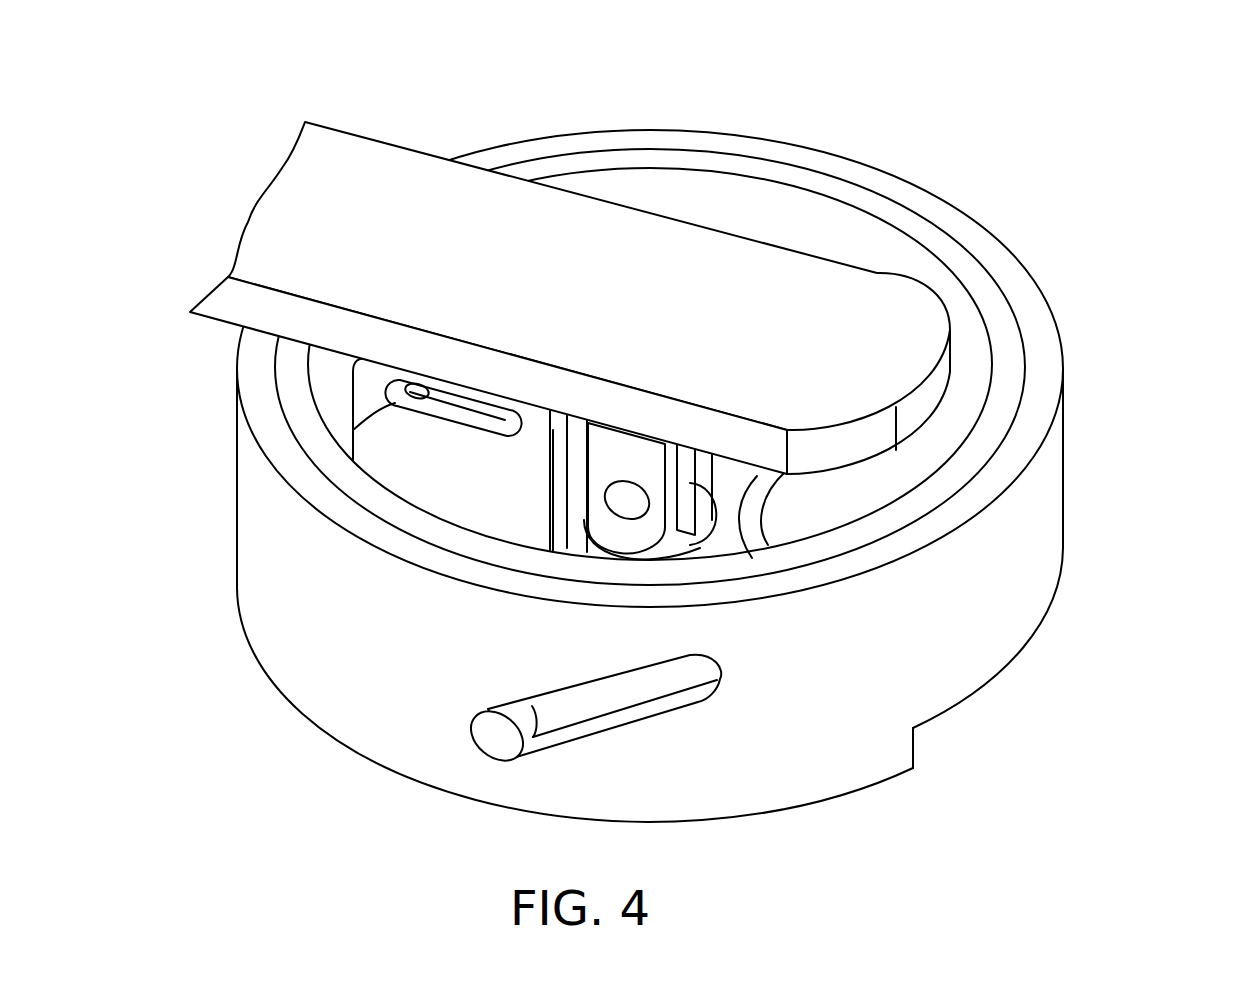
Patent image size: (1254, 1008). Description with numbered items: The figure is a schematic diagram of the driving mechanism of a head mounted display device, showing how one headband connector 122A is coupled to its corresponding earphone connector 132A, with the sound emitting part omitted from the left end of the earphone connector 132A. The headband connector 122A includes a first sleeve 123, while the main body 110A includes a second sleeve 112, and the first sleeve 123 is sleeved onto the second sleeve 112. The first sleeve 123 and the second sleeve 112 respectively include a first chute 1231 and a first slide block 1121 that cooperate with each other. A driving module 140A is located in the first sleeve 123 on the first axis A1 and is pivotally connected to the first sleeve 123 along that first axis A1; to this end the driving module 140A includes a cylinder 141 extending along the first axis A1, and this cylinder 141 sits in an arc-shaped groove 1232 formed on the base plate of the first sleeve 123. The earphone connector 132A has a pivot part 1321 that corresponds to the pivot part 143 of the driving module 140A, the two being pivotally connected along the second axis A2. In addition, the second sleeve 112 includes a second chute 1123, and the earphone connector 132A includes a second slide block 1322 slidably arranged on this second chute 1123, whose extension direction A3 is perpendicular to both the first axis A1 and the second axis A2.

The earphone connector 132A is at (383, 172).
The pivot part 1321 is at (640, 457).
The second slide block 1322 is at (440, 392).
The second chute 1123 is at (453, 417).
The first sleeve 123 is at (1017, 447).
The headband connector 122A is at (729, 476).
The second sleeve 112 is at (907, 512).
The main body 110A is at (748, 414).
The pivot part 143 is at (763, 467).
The cylinder 141 is at (747, 493).
The driving module 140A is at (853, 601).
The arc-shaped groove 1232 is at (697, 540).
The first slide block 1121 is at (495, 745).
The first chute 1231 is at (558, 741).
The first axis A1 is at (640, 870).
The second axis A2 is at (960, 90).
The extension direction A3 is at (1160, 590).